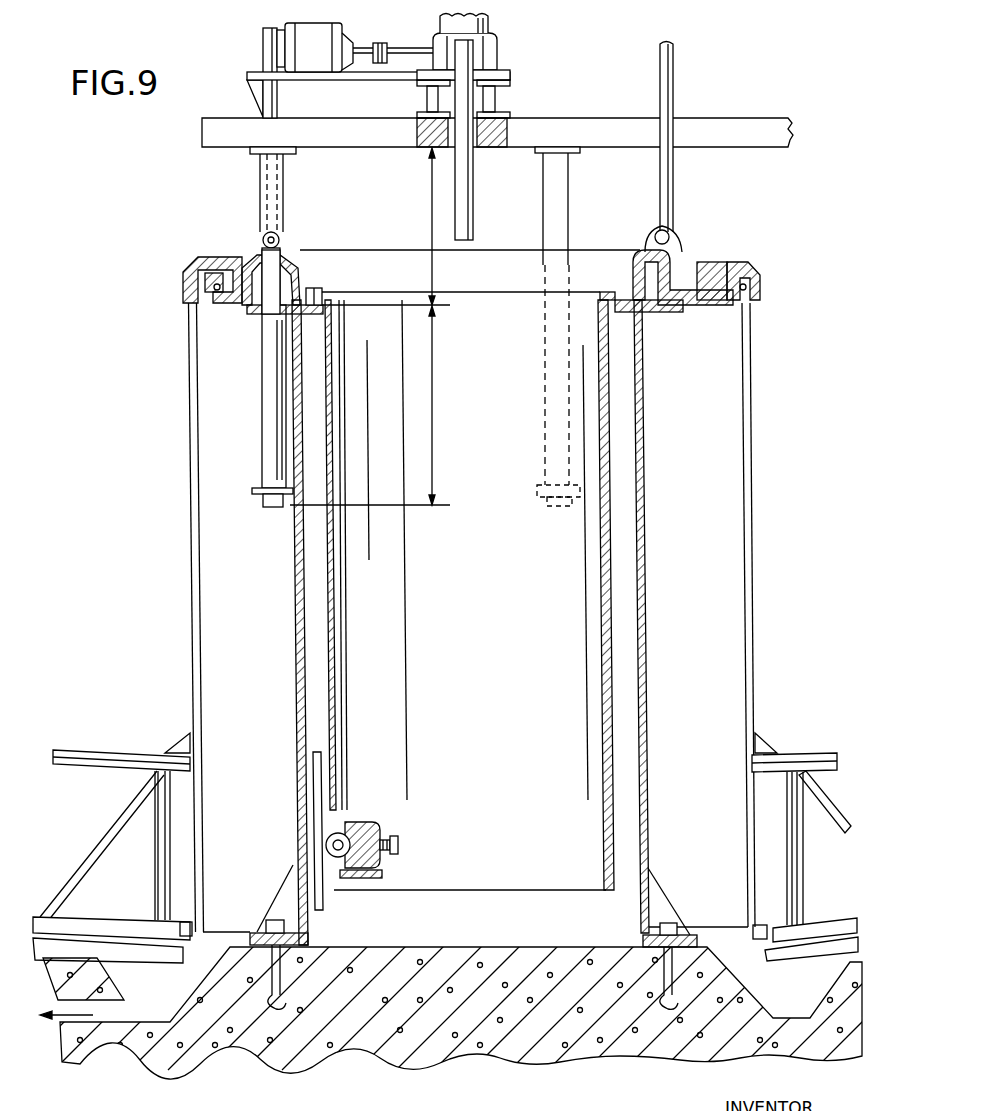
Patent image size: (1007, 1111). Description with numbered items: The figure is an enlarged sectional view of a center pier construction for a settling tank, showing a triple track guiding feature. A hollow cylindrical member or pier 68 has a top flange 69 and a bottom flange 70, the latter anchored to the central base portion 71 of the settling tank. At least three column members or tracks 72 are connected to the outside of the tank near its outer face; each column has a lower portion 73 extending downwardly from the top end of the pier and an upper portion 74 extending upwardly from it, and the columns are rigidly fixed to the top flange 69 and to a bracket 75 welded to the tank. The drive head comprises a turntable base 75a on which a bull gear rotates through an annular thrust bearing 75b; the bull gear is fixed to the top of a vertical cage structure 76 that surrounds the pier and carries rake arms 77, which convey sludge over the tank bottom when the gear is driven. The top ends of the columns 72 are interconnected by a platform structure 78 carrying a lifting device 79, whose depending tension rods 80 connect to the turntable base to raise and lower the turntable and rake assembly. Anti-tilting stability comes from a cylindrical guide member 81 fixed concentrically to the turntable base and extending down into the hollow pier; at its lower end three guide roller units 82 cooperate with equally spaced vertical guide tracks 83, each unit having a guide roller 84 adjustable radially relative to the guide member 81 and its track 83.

The hollow cylindrical member or pier 68 is at (297, 628).
The top flange 69 is at (665, 316).
The bottom flange 70 is at (258, 933).
The central base portion 71 is at (365, 1060).
The column members or tracks 72 is at (262, 375).
The lower portion 73 is at (370, 405).
The upper portion 74 is at (432, 226).
The bracket 75 is at (264, 500).
The turntable base 75a is at (375, 284).
The annular thrust bearing 75b is at (220, 297).
The vertical cage structure 76 is at (190, 486).
The rake arms 77 is at (70, 750).
The platform structure 78 is at (370, 140).
The lifting device 79 is at (497, 52).
The tension rods 80 is at (263, 37).
The cylindrical guide member 81 is at (336, 540).
The guide roller units 82 is at (352, 822).
The vertical guide tracks 83 is at (297, 825).
The guide roller 84 is at (380, 874).